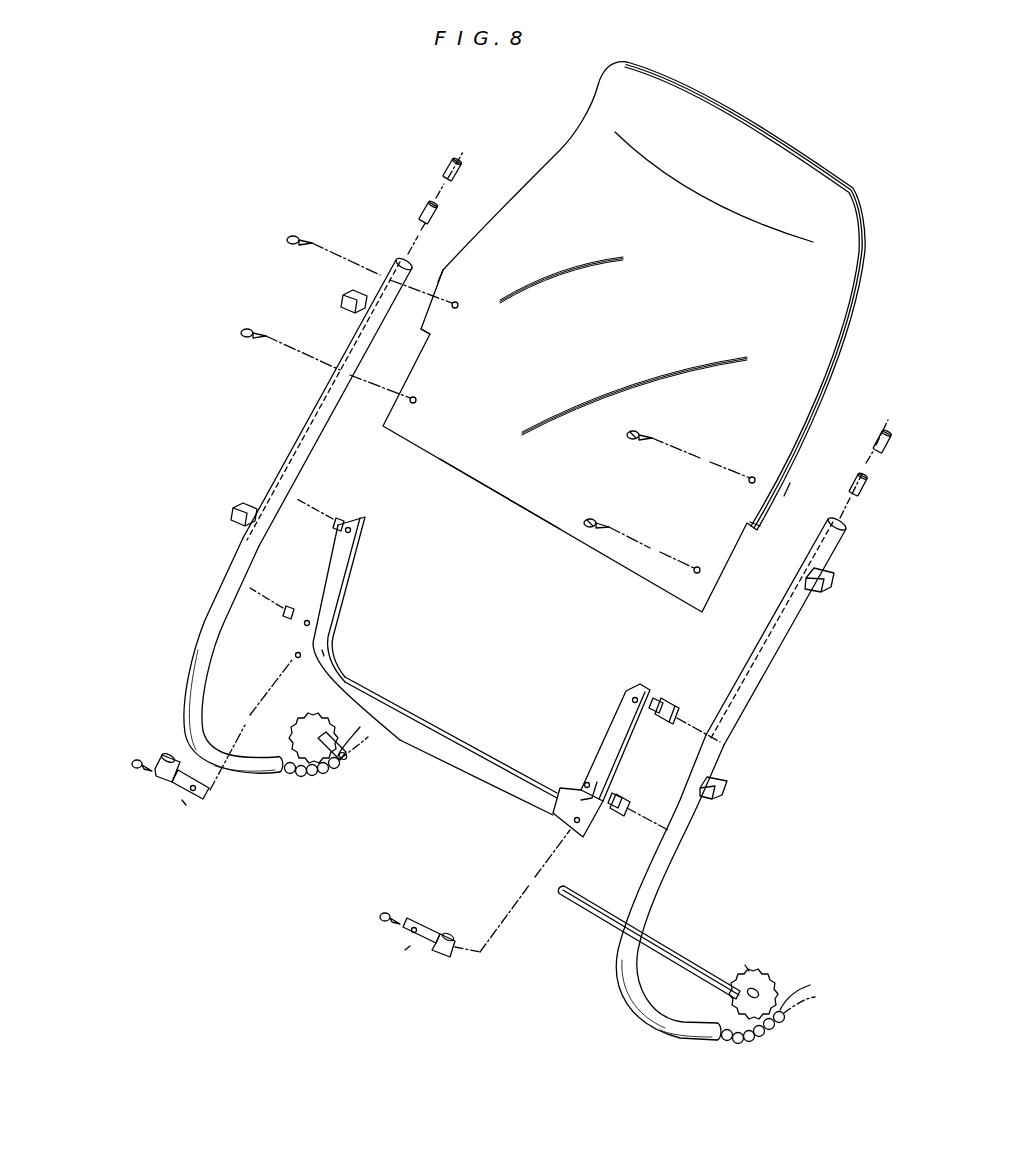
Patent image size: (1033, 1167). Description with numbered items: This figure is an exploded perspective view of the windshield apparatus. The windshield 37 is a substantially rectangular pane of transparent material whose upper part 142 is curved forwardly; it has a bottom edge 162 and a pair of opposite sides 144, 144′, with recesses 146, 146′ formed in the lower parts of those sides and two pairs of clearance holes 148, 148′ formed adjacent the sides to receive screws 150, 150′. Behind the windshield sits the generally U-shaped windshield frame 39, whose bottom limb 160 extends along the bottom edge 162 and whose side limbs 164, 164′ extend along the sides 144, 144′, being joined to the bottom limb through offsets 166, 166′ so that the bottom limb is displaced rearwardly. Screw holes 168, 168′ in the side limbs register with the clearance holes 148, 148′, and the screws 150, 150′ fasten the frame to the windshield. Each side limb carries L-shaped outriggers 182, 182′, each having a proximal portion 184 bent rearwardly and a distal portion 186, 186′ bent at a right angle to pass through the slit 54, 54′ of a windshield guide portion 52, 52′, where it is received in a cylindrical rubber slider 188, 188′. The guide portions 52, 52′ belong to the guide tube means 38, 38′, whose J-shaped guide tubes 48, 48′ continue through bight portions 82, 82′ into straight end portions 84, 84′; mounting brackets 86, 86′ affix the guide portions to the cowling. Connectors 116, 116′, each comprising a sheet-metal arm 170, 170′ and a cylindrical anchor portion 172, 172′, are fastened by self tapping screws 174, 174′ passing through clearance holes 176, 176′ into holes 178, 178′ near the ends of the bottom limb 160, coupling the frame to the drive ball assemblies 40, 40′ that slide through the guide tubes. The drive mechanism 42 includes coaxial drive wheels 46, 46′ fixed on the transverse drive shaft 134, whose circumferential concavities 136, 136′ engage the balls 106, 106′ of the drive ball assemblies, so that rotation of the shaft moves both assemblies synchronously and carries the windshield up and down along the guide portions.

The windshield 37 is at (601, 339).
The upper part of the windshield 142 is at (738, 128).
The bottom edge of the windshield 162 is at (515, 518).
The windshield side 144 is at (787, 492).
The recess 146 is at (755, 535).
The windshield side 144′ is at (440, 272).
The recess 146′ is at (424, 332).
The clearance hole 148 is at (751, 476).
The screw 150 is at (645, 433).
The clearance hole 148′ is at (460, 302).
The screw 150′ is at (298, 236).
The guide tube means 38 is at (845, 560).
The first guide tube 48 is at (762, 712).
The windshield guide portion 52 is at (770, 680).
The slit 54 is at (790, 652).
The slider 188 is at (880, 433).
The mounting bracket 86 is at (826, 590).
The bight portion 82 is at (622, 990).
The straight end portion 84 is at (690, 1038).
The windshield frame 39 is at (457, 712).
The bottom limb 160 is at (447, 728).
The drive shaft 134 is at (412, 715).
The side limb 164 is at (614, 722).
The offset 166 is at (563, 790).
The screw hole 168 is at (634, 694).
The hole 178 is at (576, 825).
The outrigger 182 is at (672, 700).
The proximal portion 184 is at (655, 698).
The distal portion 186 is at (673, 720).
The drive mechanism 42 is at (720, 958).
The drive wheel 46 is at (772, 985).
The concavities 136 is at (752, 968).
The balls 106 is at (755, 1035).
The drive ball assembly 40 is at (738, 1048).
The connector 116 is at (405, 950).
The connector arm 170 is at (436, 925).
The anchor portion 172 is at (455, 960).
The self tapping screw 174 is at (384, 905).
The clearance hole 176 is at (414, 915).
The guide tube means 38′ is at (392, 258).
The first guide tube 48′ is at (290, 438).
The windshield guide portion 52′ is at (330, 393).
The slit 54′ is at (320, 440).
The slider 188′ is at (445, 165).
The mounting bracket 86′ is at (355, 305).
The bight portion 82′ is at (184, 688).
The straight end portion 84′ is at (252, 780).
The side limb 164′ is at (342, 580).
The offset 166′ is at (325, 648).
The screw hole 168′ is at (353, 528).
The hole 178′ is at (293, 657).
The outrigger 182′ is at (341, 515).
The distal portion 186′ is at (335, 530).
The drive wheel 46′ is at (305, 730).
The concavities 136′ is at (330, 745).
The balls 106′ is at (305, 785).
The drive ball assembly 40′ is at (298, 790).
The connector 116′ is at (175, 800).
The connector arm 170′ is at (195, 793).
The anchor portion 172′ is at (163, 790).
The self tapping screw 174′ is at (139, 758).
The clearance hole 176′ is at (186, 810).